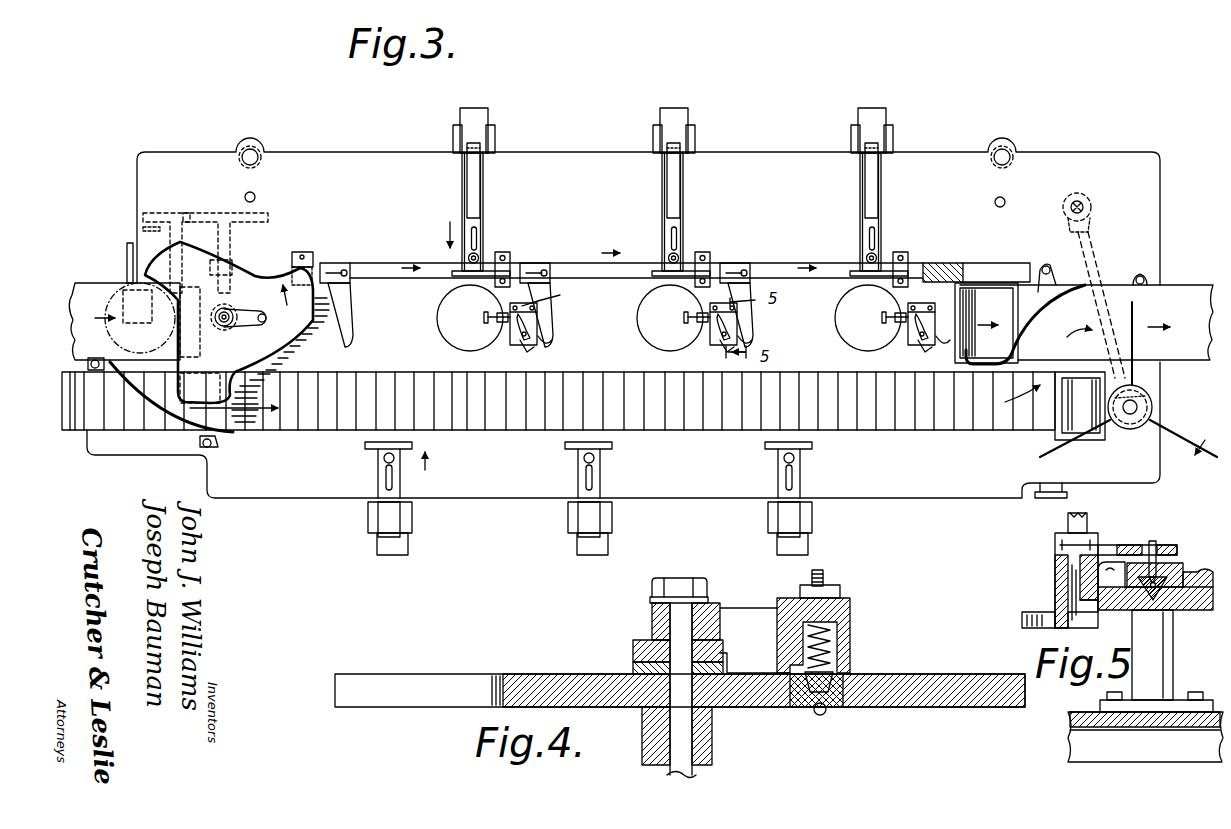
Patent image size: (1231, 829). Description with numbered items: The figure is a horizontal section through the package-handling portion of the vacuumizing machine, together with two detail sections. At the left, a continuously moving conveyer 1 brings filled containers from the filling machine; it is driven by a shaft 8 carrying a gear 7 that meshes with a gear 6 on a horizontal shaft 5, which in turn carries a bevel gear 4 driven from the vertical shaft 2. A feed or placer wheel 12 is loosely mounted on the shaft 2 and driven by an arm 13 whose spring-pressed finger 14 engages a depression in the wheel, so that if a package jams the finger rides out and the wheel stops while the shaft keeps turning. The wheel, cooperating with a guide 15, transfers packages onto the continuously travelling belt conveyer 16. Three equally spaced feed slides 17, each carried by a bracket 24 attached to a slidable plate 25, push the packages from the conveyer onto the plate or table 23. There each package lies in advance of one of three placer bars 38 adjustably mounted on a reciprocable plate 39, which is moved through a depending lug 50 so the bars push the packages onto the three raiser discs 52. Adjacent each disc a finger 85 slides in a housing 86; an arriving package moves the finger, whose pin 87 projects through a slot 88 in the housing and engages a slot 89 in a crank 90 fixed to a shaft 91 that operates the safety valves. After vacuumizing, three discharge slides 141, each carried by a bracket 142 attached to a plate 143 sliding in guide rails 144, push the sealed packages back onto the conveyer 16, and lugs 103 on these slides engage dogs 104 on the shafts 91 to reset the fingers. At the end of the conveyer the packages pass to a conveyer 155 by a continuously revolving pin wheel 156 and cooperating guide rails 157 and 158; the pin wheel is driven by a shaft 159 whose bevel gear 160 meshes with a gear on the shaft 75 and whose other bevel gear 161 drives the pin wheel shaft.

In FIG. 3, the conveyer 1 is at (105, 292).
In FIG. 4, the vertical shaft 2 is at (700, 738).
In FIG. 3, the bevel gear 4 is at (236, 310).
In FIG. 3, the horizontal shaft 5 is at (237, 260).
In FIG. 3, the gear 6 is at (214, 215).
In FIG. 3, the gear 7 is at (160, 213).
In FIG. 3, the shaft 8 is at (143, 228).
In FIG. 3, the feed or placer wheel 12 is at (200, 330).
In FIG. 4, the feed or placer wheel 12 is at (578, 672).
In FIG. 3, the arm 13 is at (250, 324).
In FIG. 4, the arm 13 is at (748, 614).
In FIG. 4, the spring-pressed finger 14 is at (835, 680).
In FIG. 3, the guide 15 is at (150, 427).
In FIG. 3, the belt conveyer 16 is at (712, 430).
In FIG. 3, the feed slides 17 is at (412, 446).
In FIG. 3, the plate or table 23 is at (617, 359).
In FIG. 3, the bracket 24 is at (392, 521).
In FIG. 3, the plate 25 is at (408, 546).
In FIG. 3, the placer bars 38 is at (352, 275).
In FIG. 3, the reciprocable plate 39 is at (436, 264).
In FIG. 3, the lug 50 is at (297, 252).
In FIG. 3, the raiser discs 52 is at (437, 311).
In FIG. 3, the shaft 75 is at (1085, 204).
In FIG. 3, the finger 85 is at (485, 318).
In FIG. 5, the finger 85 is at (1190, 585).
In FIG. 3, the housing 86 is at (538, 322).
In FIG. 5, the housing 86 is at (1180, 565).
In FIG. 5, the pin 87 is at (1155, 541).
In FIG. 3, the slot 88 is at (770, 323).
In FIG. 5, the slot 88 is at (1190, 568).
In FIG. 5, the slot 89 is at (1135, 540).
In FIG. 3, the crank 90 is at (518, 335).
In FIG. 5, the crank 90 is at (1125, 545).
In FIG. 3, the shaft 91 is at (548, 345).
In FIG. 5, the shaft 91 is at (1068, 522).
In FIG. 3, the lugs 103 is at (508, 262).
In FIG. 3, the dogs 104 is at (524, 350).
In FIG. 5, the dogs 104 is at (1038, 613).
In FIG. 3, the discharge slides 141 is at (455, 278).
In FIG. 3, the bracket 142 is at (483, 180).
In FIG. 3, the plate 143 is at (488, 130).
In FIG. 3, the guide rails 144 is at (453, 140).
In FIG. 3, the conveyer 155 is at (1205, 293).
In FIG. 3, the pin wheel 156 is at (1128, 430).
In FIG. 3, the guide rail 157 is at (1030, 300).
In FIG. 3, the guide rail 158 is at (1068, 400).
In FIG. 3, the shaft 159 is at (1095, 258).
In FIG. 3, the bevel gear 160 is at (1100, 212).
In FIG. 3, the bevel gear 161 is at (1148, 395).